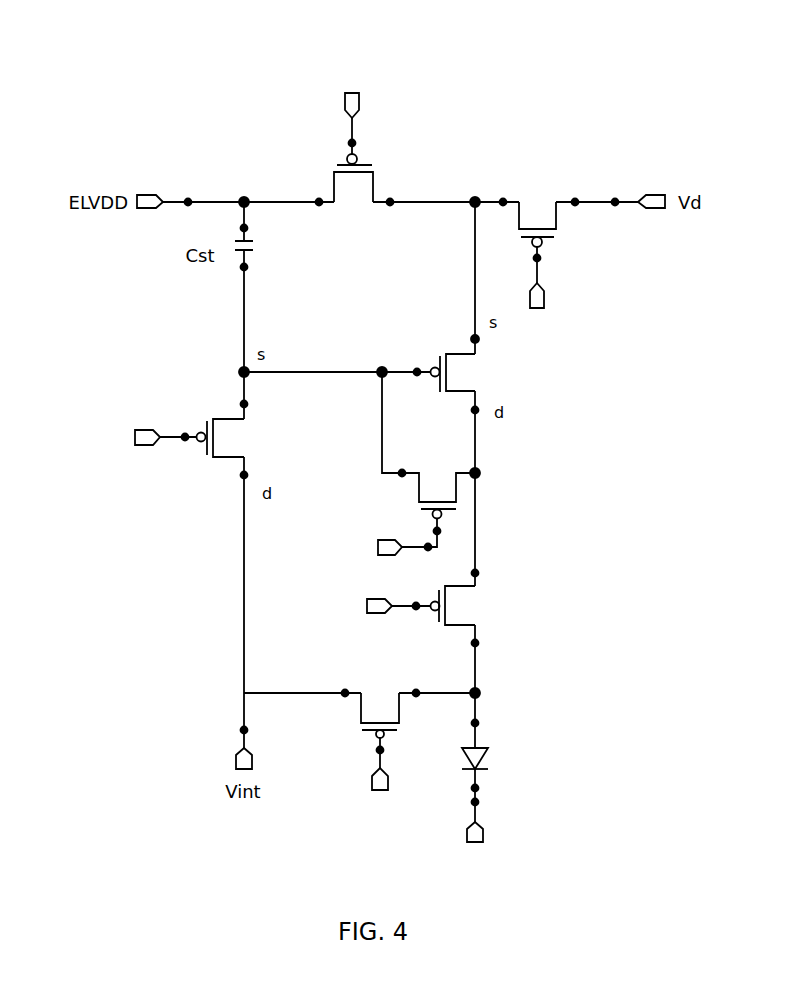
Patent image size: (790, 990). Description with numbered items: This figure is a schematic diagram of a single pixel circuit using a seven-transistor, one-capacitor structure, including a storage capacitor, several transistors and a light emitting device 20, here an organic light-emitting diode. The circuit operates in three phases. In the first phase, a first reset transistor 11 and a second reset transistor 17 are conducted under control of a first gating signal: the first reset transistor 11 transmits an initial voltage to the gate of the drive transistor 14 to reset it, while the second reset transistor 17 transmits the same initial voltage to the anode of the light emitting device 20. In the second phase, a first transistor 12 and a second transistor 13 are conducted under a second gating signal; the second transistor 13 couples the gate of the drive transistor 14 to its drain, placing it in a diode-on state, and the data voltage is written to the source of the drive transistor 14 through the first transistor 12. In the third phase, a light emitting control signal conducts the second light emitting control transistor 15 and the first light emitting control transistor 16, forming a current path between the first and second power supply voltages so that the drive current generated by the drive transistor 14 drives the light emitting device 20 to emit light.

The first reset transistor 11 is at (189, 422).
The first transistor 12 is at (537, 254).
The second transistor 13 is at (427, 465).
The drive transistor 14 is at (466, 367).
The second light emitting control transistor 15 is at (426, 605).
The first light emitting control transistor 16 is at (353, 150).
The second reset transistor 17 is at (379, 744).
The light emitting device 20 is at (488, 784).